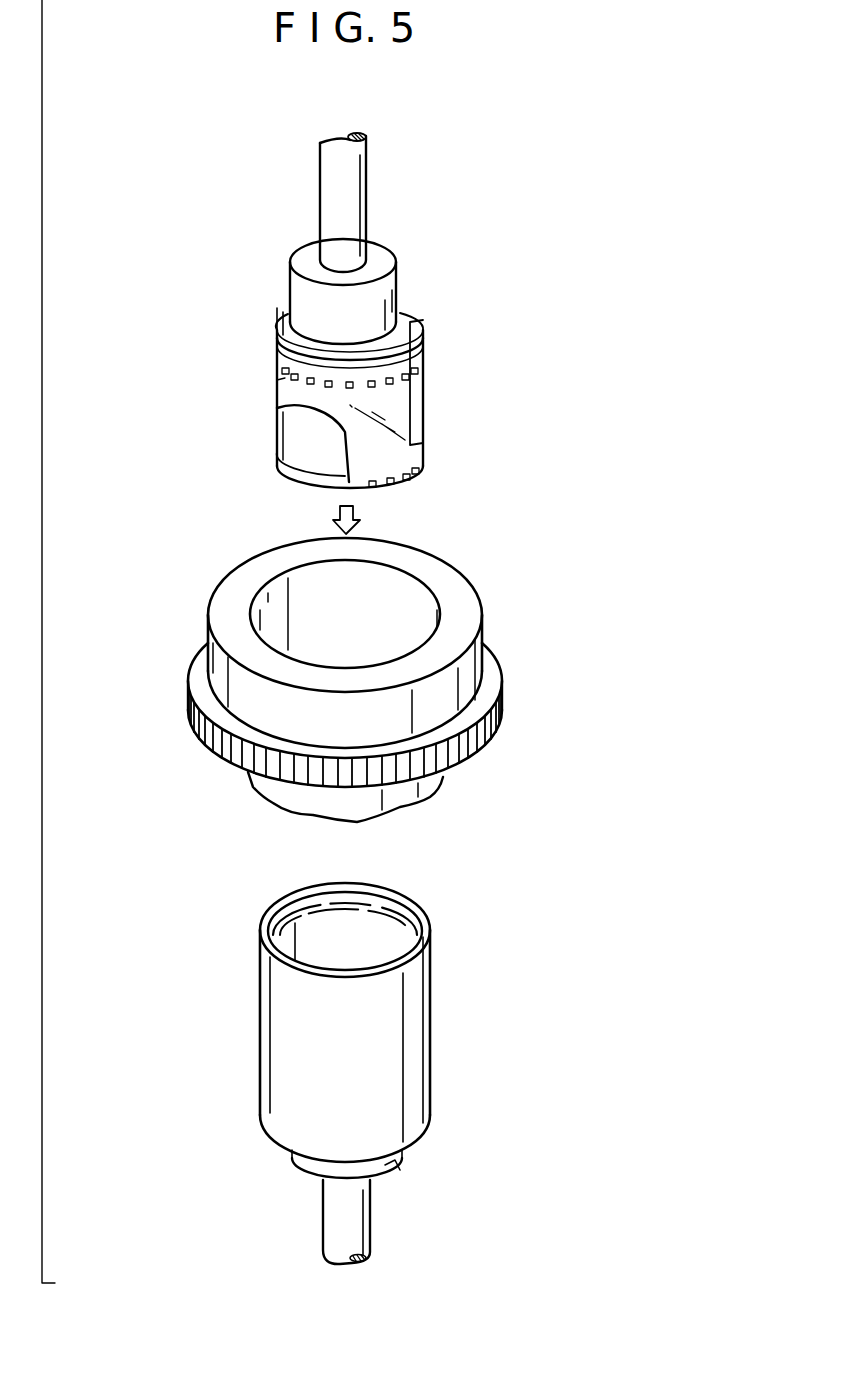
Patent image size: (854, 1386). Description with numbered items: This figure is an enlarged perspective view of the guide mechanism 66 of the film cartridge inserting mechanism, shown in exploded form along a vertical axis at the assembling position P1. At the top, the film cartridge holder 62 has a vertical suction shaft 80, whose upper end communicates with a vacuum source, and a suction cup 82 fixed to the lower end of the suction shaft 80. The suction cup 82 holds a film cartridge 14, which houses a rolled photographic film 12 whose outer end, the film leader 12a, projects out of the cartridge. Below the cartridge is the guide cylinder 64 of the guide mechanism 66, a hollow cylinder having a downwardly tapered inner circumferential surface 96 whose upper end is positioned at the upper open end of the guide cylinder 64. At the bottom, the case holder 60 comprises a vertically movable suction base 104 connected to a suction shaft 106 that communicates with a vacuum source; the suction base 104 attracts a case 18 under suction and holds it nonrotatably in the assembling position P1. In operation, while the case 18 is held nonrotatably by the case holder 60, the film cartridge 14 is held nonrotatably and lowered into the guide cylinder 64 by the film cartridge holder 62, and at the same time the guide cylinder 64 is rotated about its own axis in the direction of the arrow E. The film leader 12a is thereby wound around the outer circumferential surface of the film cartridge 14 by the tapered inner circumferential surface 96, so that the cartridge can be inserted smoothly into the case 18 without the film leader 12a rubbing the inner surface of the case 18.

The film cartridge holder 62 is at (358, 202).
The vertical suction shaft 80 is at (333, 198).
The suction cup 82 is at (385, 300).
The photographic film 12 is at (332, 398).
The film leader 12a is at (276, 380).
The film cartridge 14 is at (272, 430).
The guide mechanism 66 is at (506, 377).
The assembling position P1 is at (176, 577).
The guide cylinder 64 is at (374, 658).
The downwardly tapered inner circumferential surface 96 is at (418, 604).
The arrow E is at (523, 665).
The case 18 is at (410, 1013).
The vertically movable suction base 104 is at (395, 1170).
The case holder 60 is at (339, 1221).
The suction shaft 106 is at (330, 1222).